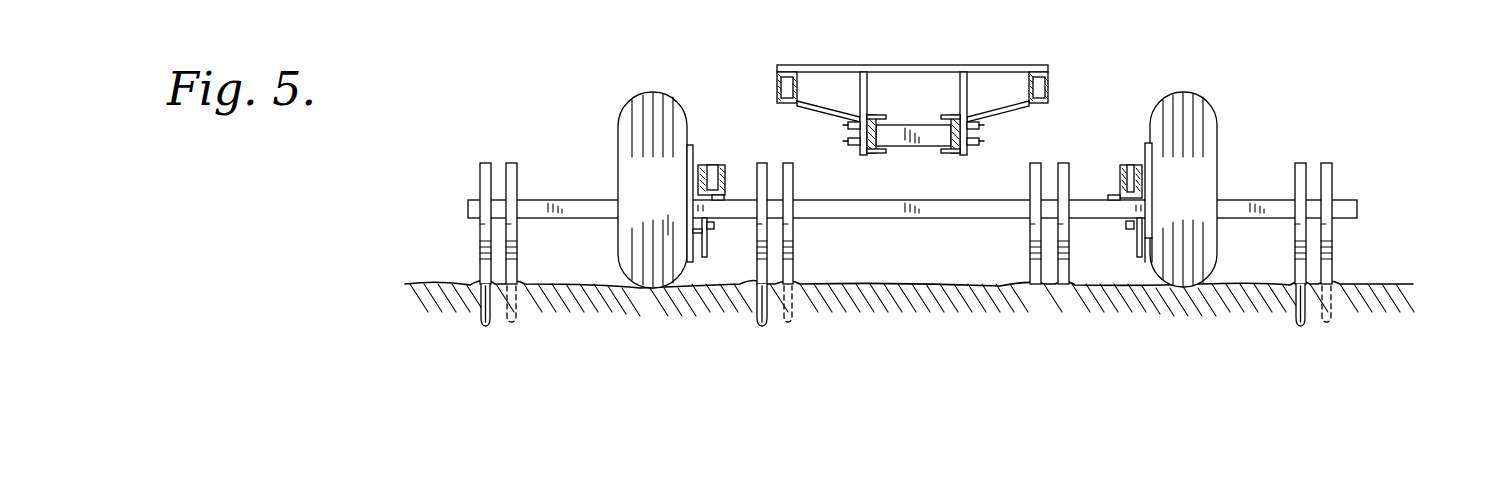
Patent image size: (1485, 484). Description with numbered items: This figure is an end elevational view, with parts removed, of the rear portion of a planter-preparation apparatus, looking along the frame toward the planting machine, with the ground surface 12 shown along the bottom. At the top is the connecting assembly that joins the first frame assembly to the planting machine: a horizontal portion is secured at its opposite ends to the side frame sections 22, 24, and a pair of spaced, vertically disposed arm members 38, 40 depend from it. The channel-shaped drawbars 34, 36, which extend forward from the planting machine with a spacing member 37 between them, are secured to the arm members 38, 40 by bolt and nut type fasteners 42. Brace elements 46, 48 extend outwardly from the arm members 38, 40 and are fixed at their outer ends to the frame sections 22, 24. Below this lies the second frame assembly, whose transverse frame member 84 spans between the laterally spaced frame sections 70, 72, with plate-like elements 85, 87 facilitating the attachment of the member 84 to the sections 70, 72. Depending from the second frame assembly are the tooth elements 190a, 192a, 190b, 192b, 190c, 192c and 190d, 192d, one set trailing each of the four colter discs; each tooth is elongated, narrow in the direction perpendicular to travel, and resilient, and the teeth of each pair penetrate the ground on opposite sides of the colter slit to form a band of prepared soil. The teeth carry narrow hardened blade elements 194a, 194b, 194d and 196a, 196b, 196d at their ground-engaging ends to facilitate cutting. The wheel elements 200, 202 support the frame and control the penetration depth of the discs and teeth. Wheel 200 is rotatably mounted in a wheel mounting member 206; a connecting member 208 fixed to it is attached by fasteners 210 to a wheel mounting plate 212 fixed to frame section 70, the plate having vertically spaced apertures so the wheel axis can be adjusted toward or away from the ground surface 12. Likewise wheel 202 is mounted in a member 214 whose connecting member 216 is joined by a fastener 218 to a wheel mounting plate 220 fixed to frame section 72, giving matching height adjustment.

The ground surface 12 is at (1393, 284).
The side frame section 22 is at (777, 82).
The side frame section 24 is at (1048, 80).
The drawbar 34 is at (870, 156).
The drawbar 36 is at (954, 156).
The spacing member 37 is at (908, 125).
The arm member 38 is at (864, 78).
The arm member 40 is at (962, 78).
The bolt and nut type fasteners 42 is at (846, 141).
The brace element 46 is at (838, 114).
The brace element 48 is at (1006, 99).
The frame section 70 is at (712, 165).
The frame section 72 is at (1124, 165).
The transverse frame member 84 is at (903, 213).
The plate-like element 85 is at (722, 198).
The plate-like element 87 is at (1118, 200).
The tooth element 190a is at (545, 154).
The tooth element 190b is at (795, 180).
The tooth element 190c is at (1071, 170).
The tooth element 190d is at (1334, 168).
The tooth element 192a is at (478, 168).
The tooth element 192b is at (769, 175).
The tooth element 192c is at (1028, 175).
The tooth element 192d is at (1293, 168).
The blade element 194a is at (520, 316).
The blade element 194b is at (790, 320).
The blade element 194d is at (1335, 315).
The blade element 196a is at (480, 320).
The blade element 196b is at (764, 325).
The blade element 196d is at (1296, 318).
The wheel element 200 is at (630, 112).
The wheel element 202 is at (1195, 96).
The wheel mounting member 206 is at (691, 150).
The connecting member 208 is at (690, 262).
The fastener 210 is at (714, 232).
The wheel mounting plate 212 is at (703, 260).
The wheel mounting member 214 is at (1148, 143).
The connecting member 216 is at (1150, 262).
The fastener 218 is at (1124, 226).
The wheel mounting plate 220 is at (1134, 244).